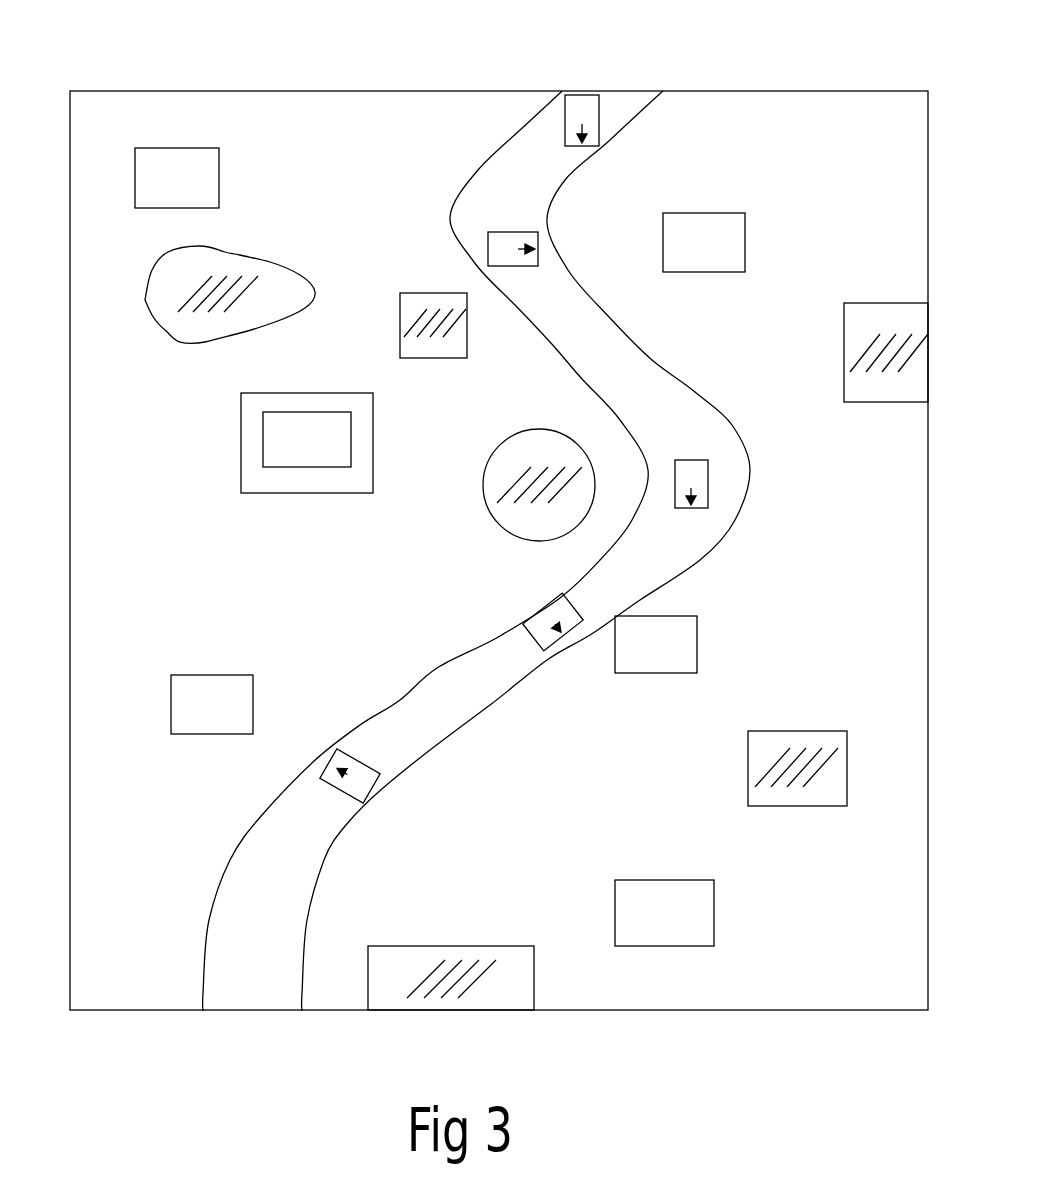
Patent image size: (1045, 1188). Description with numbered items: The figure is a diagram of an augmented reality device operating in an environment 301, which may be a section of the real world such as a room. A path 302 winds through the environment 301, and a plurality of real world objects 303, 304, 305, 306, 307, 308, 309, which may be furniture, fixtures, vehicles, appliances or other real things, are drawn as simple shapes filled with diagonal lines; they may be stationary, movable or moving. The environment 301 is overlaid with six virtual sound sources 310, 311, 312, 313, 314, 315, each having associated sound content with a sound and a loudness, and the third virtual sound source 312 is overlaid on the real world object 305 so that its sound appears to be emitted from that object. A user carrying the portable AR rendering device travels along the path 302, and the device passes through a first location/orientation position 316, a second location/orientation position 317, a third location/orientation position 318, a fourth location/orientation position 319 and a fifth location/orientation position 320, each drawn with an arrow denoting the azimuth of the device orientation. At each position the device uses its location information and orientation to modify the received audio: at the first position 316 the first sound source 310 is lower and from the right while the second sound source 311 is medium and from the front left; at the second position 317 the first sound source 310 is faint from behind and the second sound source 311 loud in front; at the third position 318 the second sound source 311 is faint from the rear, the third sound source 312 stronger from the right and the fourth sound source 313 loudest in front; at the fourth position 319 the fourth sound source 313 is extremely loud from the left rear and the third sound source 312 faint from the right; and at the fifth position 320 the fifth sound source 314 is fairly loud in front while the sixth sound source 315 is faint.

The environment 301 is at (775, 82).
The path 302 is at (510, 138).
The real world object 303 is at (220, 245).
The real world object 304 is at (400, 322).
The real world object 305 is at (242, 418).
The real world object 306 is at (488, 510).
The real world object 307 is at (888, 298).
The real world object 308 is at (775, 725).
The real world object 309 is at (407, 937).
The sound source 1 310 is at (223, 160).
The sound source 2 311 is at (718, 207).
The sound source 3 312 is at (351, 430).
The sound source 4 313 is at (707, 625).
The sound source 5 314 is at (205, 670).
The sound source 6 315 is at (665, 875).
The first location/orientation position 316 is at (599, 117).
The second location/orientation position 317 is at (497, 227).
The third location/orientation position 318 is at (708, 478).
The fourth location/orientation position 319 is at (543, 607).
The fifth location/orientation position 320 is at (380, 792).